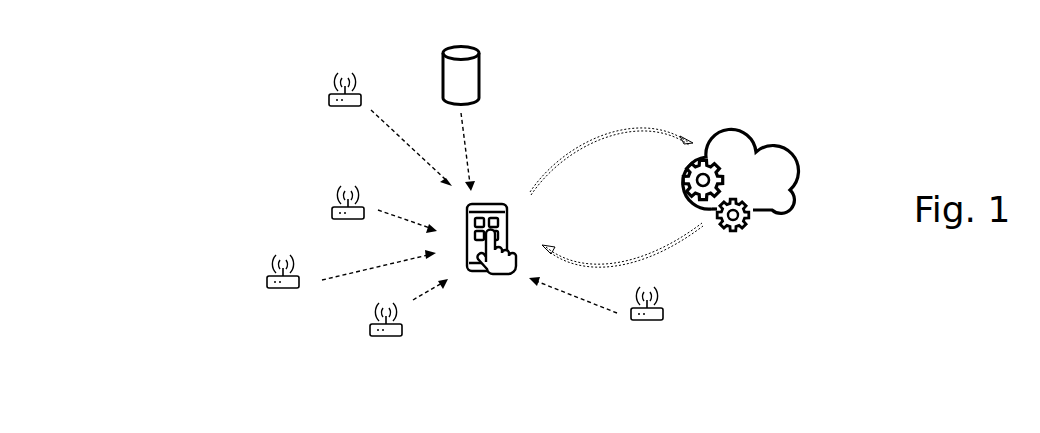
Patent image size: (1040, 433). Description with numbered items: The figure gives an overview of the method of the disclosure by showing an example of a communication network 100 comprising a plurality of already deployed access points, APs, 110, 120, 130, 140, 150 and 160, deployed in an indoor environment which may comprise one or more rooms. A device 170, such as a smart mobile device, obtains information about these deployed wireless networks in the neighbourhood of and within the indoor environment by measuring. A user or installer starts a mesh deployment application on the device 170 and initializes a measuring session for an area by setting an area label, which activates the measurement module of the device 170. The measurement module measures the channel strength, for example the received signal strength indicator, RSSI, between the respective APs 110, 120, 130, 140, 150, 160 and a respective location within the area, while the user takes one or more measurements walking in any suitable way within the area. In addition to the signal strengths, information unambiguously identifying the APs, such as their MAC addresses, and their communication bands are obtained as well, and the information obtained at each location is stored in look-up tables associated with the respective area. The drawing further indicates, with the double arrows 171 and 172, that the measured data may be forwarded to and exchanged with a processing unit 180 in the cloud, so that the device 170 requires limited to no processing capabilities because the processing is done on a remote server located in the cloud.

The communication network 100 is at (206, 159).
The access point 110 is at (389, 129).
The access point 120 is at (384, 214).
The access point 130 is at (351, 281).
The access point 140 is at (409, 320).
The access point 150 is at (596, 313).
The access point 160 is at (461, 106).
The device 170 is at (497, 194).
The upload communication 171 is at (610, 132).
The download communication 172 is at (638, 252).
The cloud server 180 is at (789, 173).